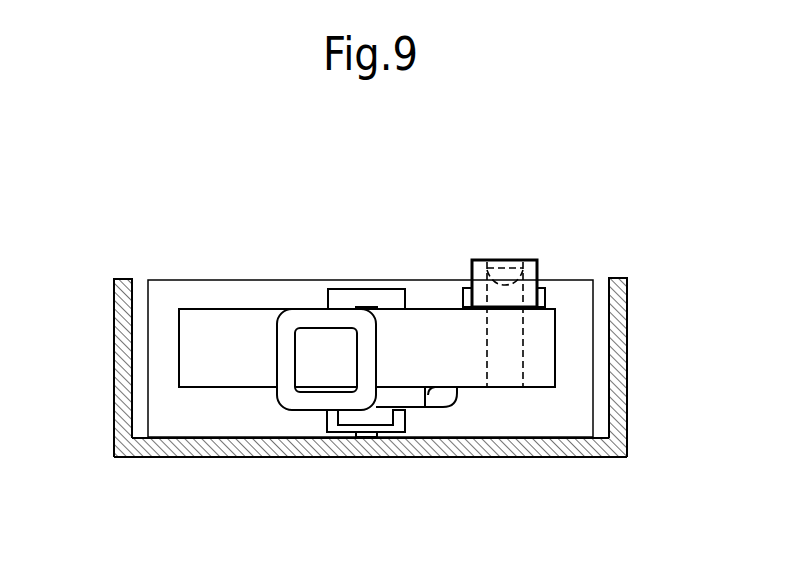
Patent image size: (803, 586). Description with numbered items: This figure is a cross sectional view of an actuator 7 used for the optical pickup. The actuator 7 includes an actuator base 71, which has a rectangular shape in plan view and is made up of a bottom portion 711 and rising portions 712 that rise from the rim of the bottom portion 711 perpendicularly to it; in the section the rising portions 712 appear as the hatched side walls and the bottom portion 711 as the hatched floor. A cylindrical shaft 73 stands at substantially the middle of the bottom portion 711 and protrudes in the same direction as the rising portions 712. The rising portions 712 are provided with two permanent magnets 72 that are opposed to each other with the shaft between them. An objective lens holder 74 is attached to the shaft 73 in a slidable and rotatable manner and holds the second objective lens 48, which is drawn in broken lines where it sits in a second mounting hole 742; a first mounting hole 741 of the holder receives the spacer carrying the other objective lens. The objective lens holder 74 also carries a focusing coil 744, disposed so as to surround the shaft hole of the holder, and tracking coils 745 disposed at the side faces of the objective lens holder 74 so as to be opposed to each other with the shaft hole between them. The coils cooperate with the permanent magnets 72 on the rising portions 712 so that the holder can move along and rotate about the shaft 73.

The actuator 7 is at (140, 203).
The actuator base 71 is at (117, 312).
The bottom portion 711 is at (165, 447).
The rising portions 712 is at (623, 330).
The permanent magnet 72 is at (350, 293).
The shaft 73 is at (367, 430).
The objective lens holder 74 is at (232, 368).
The first mounting hole 741 is at (543, 298).
The second mounting hole 742 is at (532, 279).
The focusing coil 744 is at (408, 397).
The tracking coils 745 is at (293, 317).
The second objective lens 48 is at (502, 261).